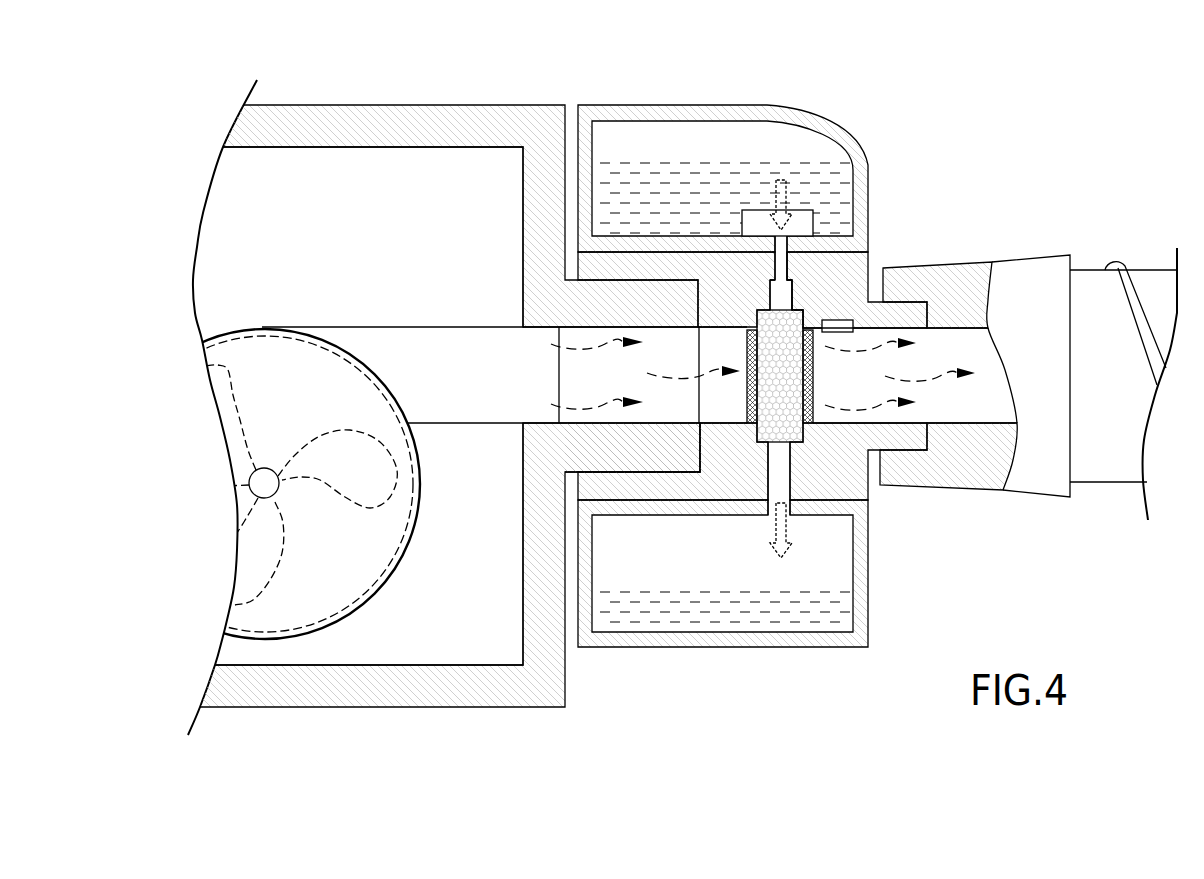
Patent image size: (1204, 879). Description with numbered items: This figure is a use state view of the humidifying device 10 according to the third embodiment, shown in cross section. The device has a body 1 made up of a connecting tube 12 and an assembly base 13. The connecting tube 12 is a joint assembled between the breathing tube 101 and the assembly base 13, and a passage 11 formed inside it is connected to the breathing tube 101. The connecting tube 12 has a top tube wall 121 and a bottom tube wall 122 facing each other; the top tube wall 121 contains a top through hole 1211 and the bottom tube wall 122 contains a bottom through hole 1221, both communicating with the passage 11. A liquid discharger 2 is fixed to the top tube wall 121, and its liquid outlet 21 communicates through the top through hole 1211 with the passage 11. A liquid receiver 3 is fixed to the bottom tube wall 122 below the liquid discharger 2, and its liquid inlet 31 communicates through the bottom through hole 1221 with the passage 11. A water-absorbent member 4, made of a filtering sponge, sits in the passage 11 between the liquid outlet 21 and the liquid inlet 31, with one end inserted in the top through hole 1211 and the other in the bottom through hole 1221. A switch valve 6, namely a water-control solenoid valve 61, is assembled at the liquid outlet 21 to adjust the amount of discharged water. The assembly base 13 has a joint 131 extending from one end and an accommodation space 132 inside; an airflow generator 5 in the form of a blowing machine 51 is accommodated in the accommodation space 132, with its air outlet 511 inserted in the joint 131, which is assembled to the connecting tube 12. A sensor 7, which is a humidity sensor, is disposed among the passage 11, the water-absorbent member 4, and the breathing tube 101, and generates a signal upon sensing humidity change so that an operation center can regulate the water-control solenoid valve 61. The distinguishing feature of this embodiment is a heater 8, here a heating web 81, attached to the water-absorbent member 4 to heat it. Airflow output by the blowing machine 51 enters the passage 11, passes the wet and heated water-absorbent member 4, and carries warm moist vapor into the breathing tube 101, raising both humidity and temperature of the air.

The body 1 is at (548, 41).
The humidifying device 10 is at (893, 105).
The liquid discharger 2 is at (748, 162).
The liquid outlet 21 is at (832, 250).
The liquid receiver 3 is at (740, 580).
The liquid inlet 31 is at (767, 513).
The water-absorbent member 4 is at (800, 400).
The airflow generator 5 is at (265, 434).
The blowing machine 51 is at (321, 384).
The air outlet 511 is at (481, 352).
The switch valve 6 is at (796, 146).
The water-control solenoid valve 61 is at (753, 223).
The sensor 7 is at (855, 325).
The heater 8 is at (816, 366).
The heating web 81 is at (815, 385).
The passage 11 is at (915, 438).
The connecting tube 12 is at (628, 242).
The top tube wall 121 is at (878, 251).
The top through hole 1211 is at (790, 249).
The bottom tube wall 122 is at (765, 520).
The bottom through hole 1221 is at (792, 468).
The assembly base 13 is at (425, 376).
The joint 131 is at (653, 452).
The accommodation space 132 is at (338, 192).
The breathing tube 101 is at (1095, 295).